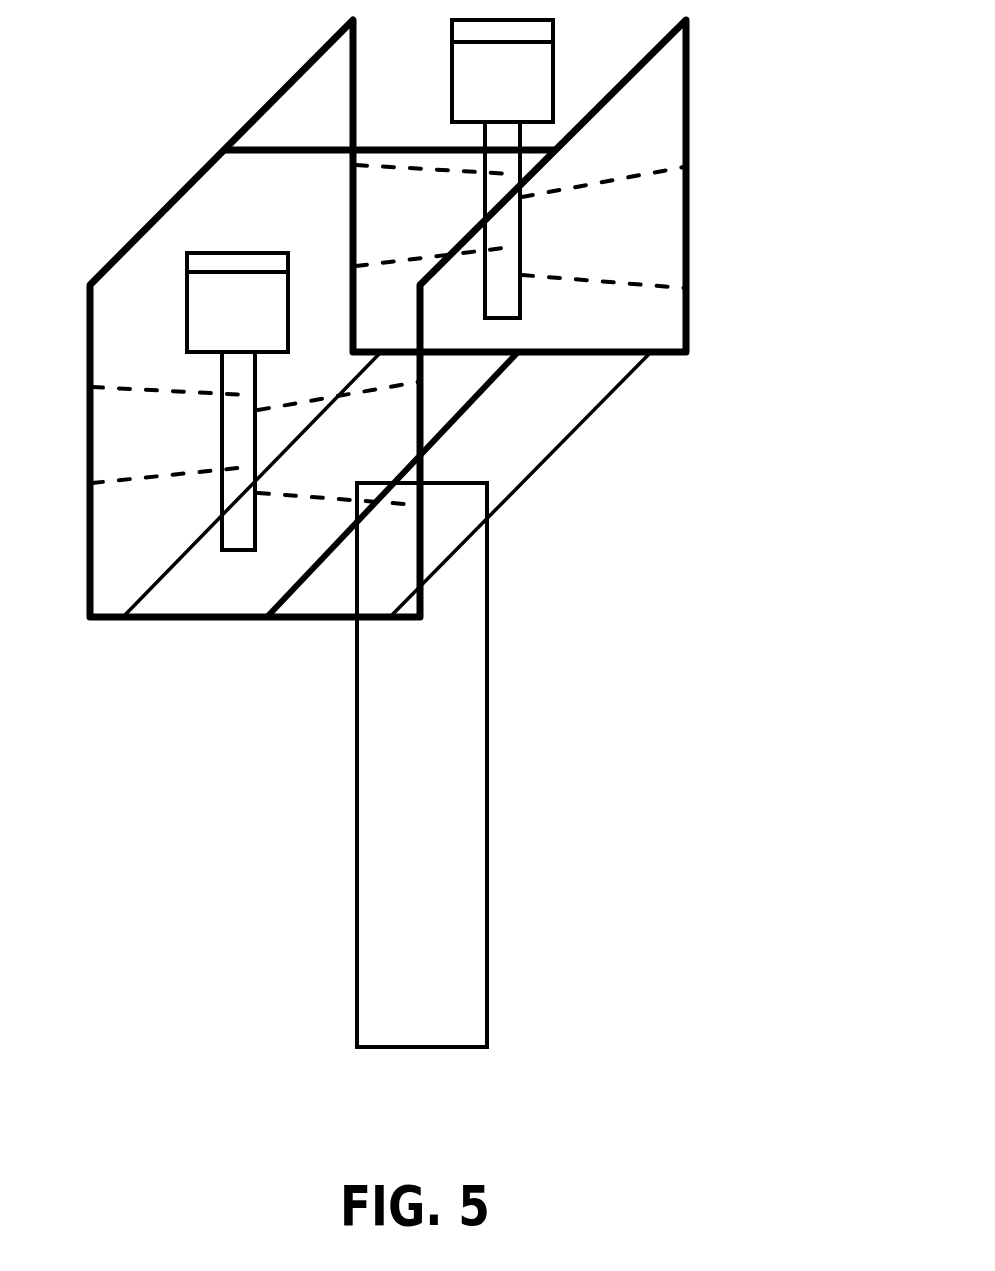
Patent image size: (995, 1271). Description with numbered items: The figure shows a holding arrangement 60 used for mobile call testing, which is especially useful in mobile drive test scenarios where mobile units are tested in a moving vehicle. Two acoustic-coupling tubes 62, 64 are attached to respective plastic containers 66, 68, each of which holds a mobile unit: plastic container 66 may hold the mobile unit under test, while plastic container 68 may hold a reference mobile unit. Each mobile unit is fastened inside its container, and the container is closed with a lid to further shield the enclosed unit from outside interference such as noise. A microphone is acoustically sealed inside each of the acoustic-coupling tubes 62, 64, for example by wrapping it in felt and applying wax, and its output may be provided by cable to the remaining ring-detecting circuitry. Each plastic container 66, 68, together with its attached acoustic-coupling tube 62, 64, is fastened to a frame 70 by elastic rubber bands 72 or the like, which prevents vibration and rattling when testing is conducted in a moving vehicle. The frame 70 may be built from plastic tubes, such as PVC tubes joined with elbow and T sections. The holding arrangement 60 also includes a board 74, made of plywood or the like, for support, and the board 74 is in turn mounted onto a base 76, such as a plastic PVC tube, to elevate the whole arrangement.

The holding arrangement 60 is at (124, 942).
The acoustic-coupling tube 62 is at (222, 453).
The acoustic-coupling tube 64 is at (520, 220).
The plastic container 66 is at (187, 292).
The plastic container 68 is at (452, 62).
The frame 70 is at (208, 166).
The elastic rubber bands 72 is at (601, 178).
The board 74 is at (553, 453).
The base 76 is at (357, 782).